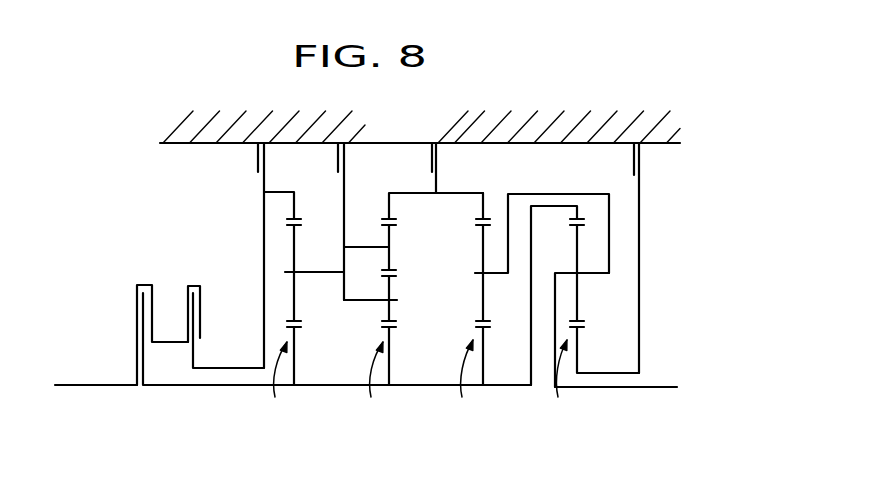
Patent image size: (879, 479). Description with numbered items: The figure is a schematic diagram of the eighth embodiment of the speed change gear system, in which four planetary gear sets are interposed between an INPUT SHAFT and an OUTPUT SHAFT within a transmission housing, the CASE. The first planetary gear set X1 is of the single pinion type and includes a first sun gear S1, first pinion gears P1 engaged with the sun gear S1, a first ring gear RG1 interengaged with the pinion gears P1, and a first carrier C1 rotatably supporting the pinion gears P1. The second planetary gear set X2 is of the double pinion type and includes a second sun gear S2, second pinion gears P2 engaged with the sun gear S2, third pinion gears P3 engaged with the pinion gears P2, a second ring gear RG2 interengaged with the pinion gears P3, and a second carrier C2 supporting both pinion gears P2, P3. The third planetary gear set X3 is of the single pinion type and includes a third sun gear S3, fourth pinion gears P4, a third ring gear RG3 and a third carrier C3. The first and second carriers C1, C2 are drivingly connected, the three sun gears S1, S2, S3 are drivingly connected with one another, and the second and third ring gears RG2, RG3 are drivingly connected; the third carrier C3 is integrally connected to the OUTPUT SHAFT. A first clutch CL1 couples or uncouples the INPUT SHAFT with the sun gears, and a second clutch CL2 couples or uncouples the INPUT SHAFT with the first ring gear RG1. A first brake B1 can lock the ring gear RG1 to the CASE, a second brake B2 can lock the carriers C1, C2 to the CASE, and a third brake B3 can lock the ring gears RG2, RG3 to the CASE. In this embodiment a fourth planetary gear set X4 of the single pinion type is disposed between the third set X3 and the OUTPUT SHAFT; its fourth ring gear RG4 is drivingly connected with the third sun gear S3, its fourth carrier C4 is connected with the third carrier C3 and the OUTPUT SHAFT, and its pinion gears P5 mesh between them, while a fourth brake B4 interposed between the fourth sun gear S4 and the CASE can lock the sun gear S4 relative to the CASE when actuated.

The case CASE is at (420, 129).
The input shaft INPUT SHAFT is at (77, 386).
The output shaft OUTPUT SHAFT is at (640, 387).
The first clutch CL1 is at (324, 318).
The second clutch CL2 is at (223, 310).
The first brake B1 is at (243, 255).
The second brake B2 is at (322, 221).
The third brake B3 is at (452, 168).
The fourth brake B4 is at (654, 258).
The first ring gear RG1 is at (293, 207).
The second ring gear RG2 is at (388, 206).
The third ring gear RG3 is at (484, 207).
The fourth ring gear RG4 is at (576, 213).
The first carrier C1 is at (322, 272).
The second carrier C2 is at (362, 261).
The third carrier C3 is at (486, 273).
The fourth carrier C4 is at (588, 275).
The first pinion gears P1 is at (294, 298).
The second pinion gears P2 is at (390, 302).
The third pinion gears P3 is at (390, 257).
The fourth pinion gears P4 is at (483, 306).
The fifth planet pinion P5 is at (578, 307).
The first sun gear S1 is at (294, 352).
The second sun gear S2 is at (389, 352).
The third sun gear S3 is at (483, 352).
The fourth sun gear S4 is at (577, 350).
The first planetary gear set X1 is at (286, 395).
The second planetary gear set X2 is at (380, 395).
The third planetary gear set X3 is at (474, 395).
The fourth planetary gear set X4 is at (569, 396).